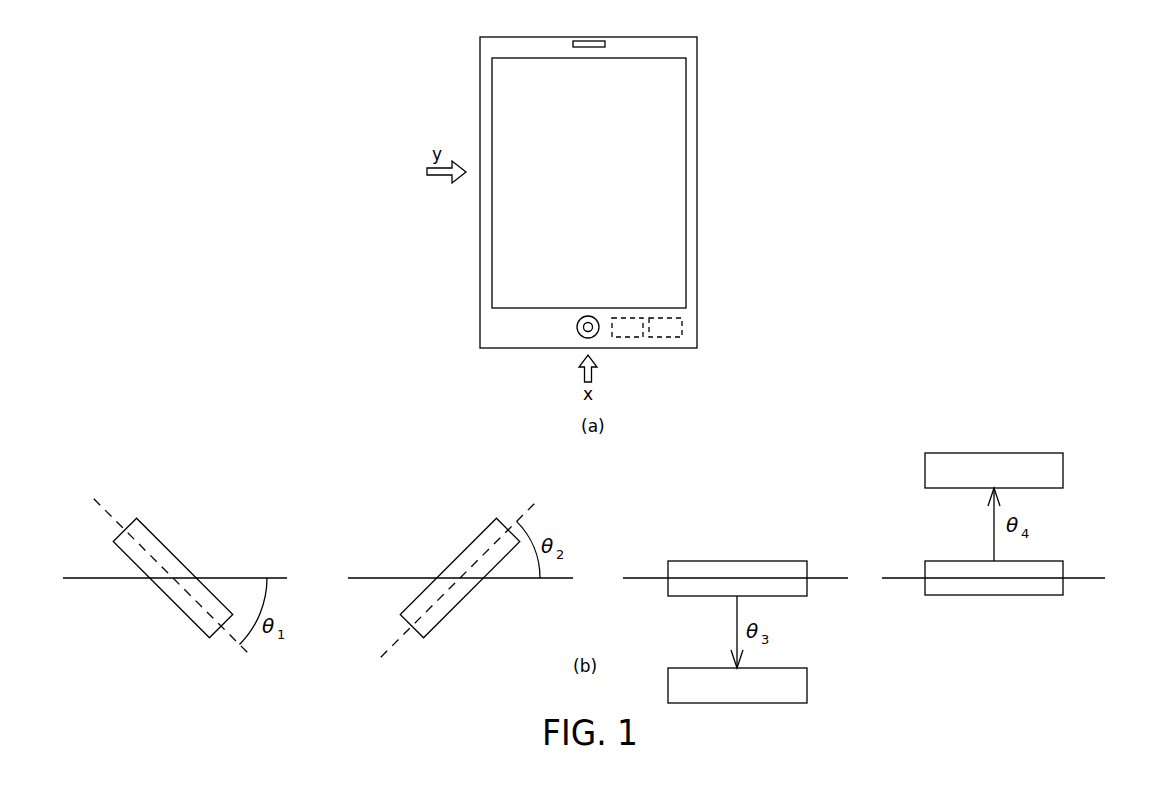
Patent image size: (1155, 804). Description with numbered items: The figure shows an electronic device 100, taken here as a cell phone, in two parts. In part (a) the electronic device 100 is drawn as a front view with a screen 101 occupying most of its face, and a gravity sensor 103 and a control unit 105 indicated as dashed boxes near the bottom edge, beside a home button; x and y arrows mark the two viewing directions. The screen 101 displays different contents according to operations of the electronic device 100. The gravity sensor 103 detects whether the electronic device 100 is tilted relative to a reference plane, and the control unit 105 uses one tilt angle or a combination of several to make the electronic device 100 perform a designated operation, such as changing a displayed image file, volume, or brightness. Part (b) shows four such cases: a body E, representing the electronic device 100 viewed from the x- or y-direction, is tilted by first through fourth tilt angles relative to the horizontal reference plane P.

The electronic device 100 is at (697, 130).
The screen 101 is at (686, 212).
The gravity sensor 103 is at (670, 338).
The control unit 105 is at (633, 338).
The electrode E is at (152, 532).
The reference plane P is at (591, 576).